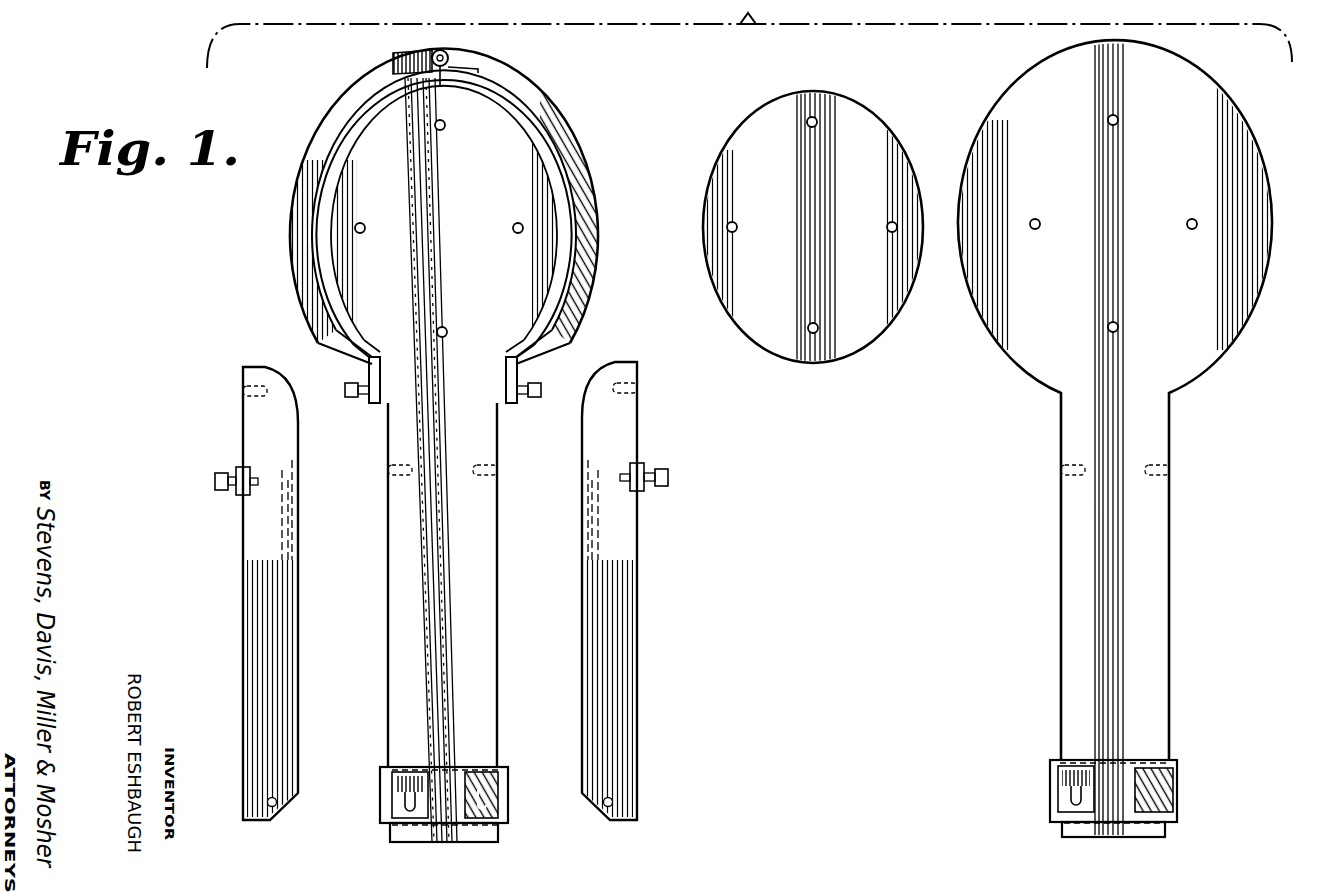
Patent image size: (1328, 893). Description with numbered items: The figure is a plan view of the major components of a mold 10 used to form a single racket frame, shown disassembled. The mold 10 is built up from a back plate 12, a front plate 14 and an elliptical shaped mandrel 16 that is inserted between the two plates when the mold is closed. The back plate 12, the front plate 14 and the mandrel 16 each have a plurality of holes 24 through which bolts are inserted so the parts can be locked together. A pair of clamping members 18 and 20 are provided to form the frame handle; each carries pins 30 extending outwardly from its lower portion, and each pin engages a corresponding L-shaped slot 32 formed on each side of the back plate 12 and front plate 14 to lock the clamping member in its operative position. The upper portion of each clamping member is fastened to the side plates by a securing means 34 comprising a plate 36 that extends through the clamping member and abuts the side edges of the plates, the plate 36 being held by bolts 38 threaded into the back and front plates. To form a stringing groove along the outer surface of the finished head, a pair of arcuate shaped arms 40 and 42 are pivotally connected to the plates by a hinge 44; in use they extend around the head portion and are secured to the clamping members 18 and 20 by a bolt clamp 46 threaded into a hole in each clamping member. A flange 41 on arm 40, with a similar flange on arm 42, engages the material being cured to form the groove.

The mold 10 is at (283, 246).
The back plate 12 is at (300, 283).
The front plate 14 is at (1236, 142).
The elliptical shaped mandrel 16 is at (818, 100).
The clamping member 18 is at (260, 435).
The clamping member 20 is at (628, 427).
The holes 24 is at (1186, 224).
The pins 30 is at (279, 808).
The L-shaped slot 32 is at (385, 790).
The securing means 34 is at (212, 478).
The plate 36 is at (238, 498).
The bolts 38 is at (215, 489).
The arcuate shaped arm 40 is at (312, 208).
The flange 41 is at (333, 183).
The arcuate shaped arm 42 is at (572, 183).
The hinge 44 is at (396, 58).
The bolt clamp 46 is at (352, 400).